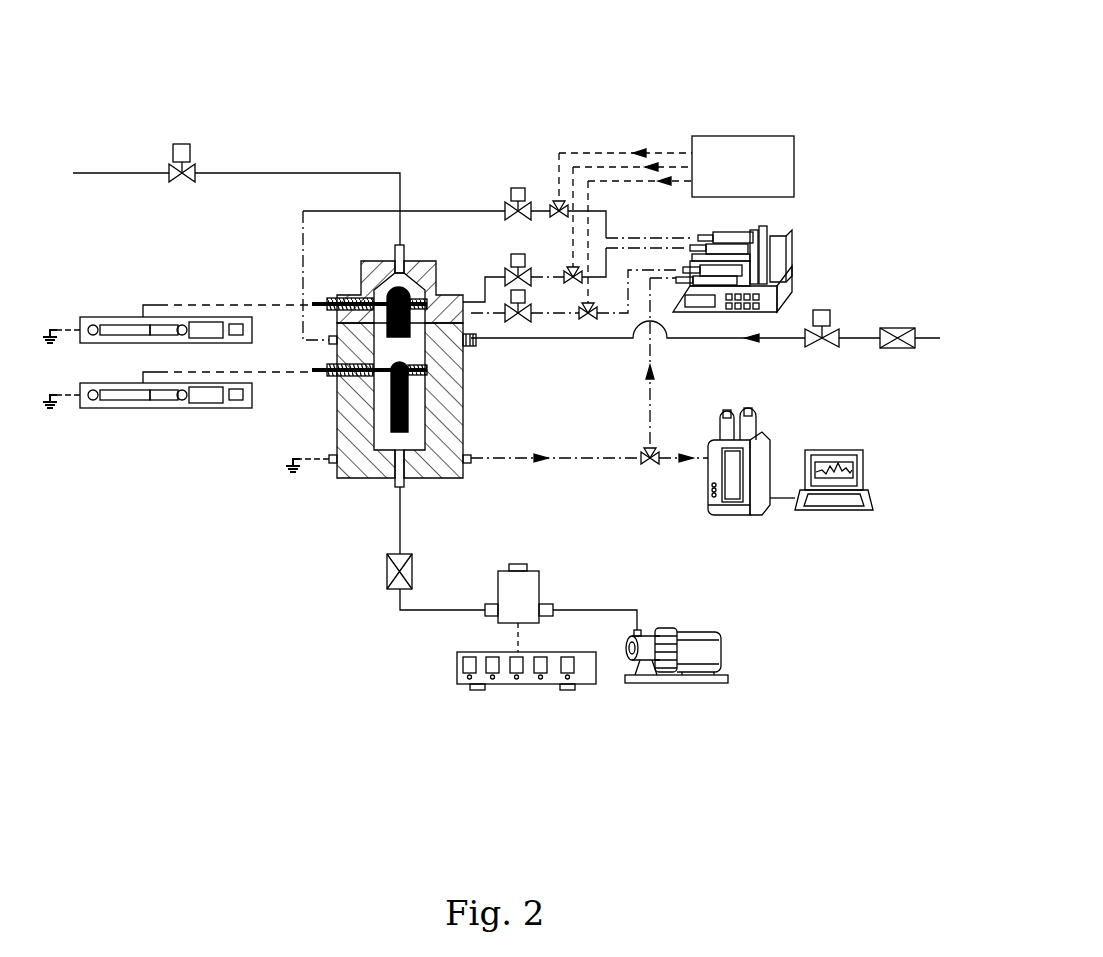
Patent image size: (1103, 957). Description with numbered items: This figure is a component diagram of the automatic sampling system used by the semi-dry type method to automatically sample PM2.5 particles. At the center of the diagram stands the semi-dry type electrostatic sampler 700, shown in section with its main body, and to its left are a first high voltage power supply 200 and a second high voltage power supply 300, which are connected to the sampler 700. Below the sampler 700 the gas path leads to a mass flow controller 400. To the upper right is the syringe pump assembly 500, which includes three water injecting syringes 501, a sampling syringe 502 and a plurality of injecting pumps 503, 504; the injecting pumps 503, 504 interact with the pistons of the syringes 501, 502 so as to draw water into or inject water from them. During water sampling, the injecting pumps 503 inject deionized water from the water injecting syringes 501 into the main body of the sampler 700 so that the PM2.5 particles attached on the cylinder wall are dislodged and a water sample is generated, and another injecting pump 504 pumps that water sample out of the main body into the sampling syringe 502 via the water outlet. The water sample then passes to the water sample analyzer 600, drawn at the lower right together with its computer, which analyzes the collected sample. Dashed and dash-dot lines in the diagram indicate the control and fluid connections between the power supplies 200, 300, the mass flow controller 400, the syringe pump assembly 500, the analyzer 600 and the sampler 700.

The first high voltage power supply 200 is at (112, 306).
The second high voltage power supply 300 is at (108, 442).
The mass flow controller 400 is at (442, 710).
The syringe pump assembly 500 is at (740, 192).
The water injecting syringe 501 is at (752, 248).
The sampling syringe 502 is at (720, 278).
The injecting pump 503 is at (829, 257).
The injecting pump 504 is at (816, 291).
The water sample analyzer 600 is at (757, 548).
The semi-dry type electrostatic sampler 700 is at (340, 506).